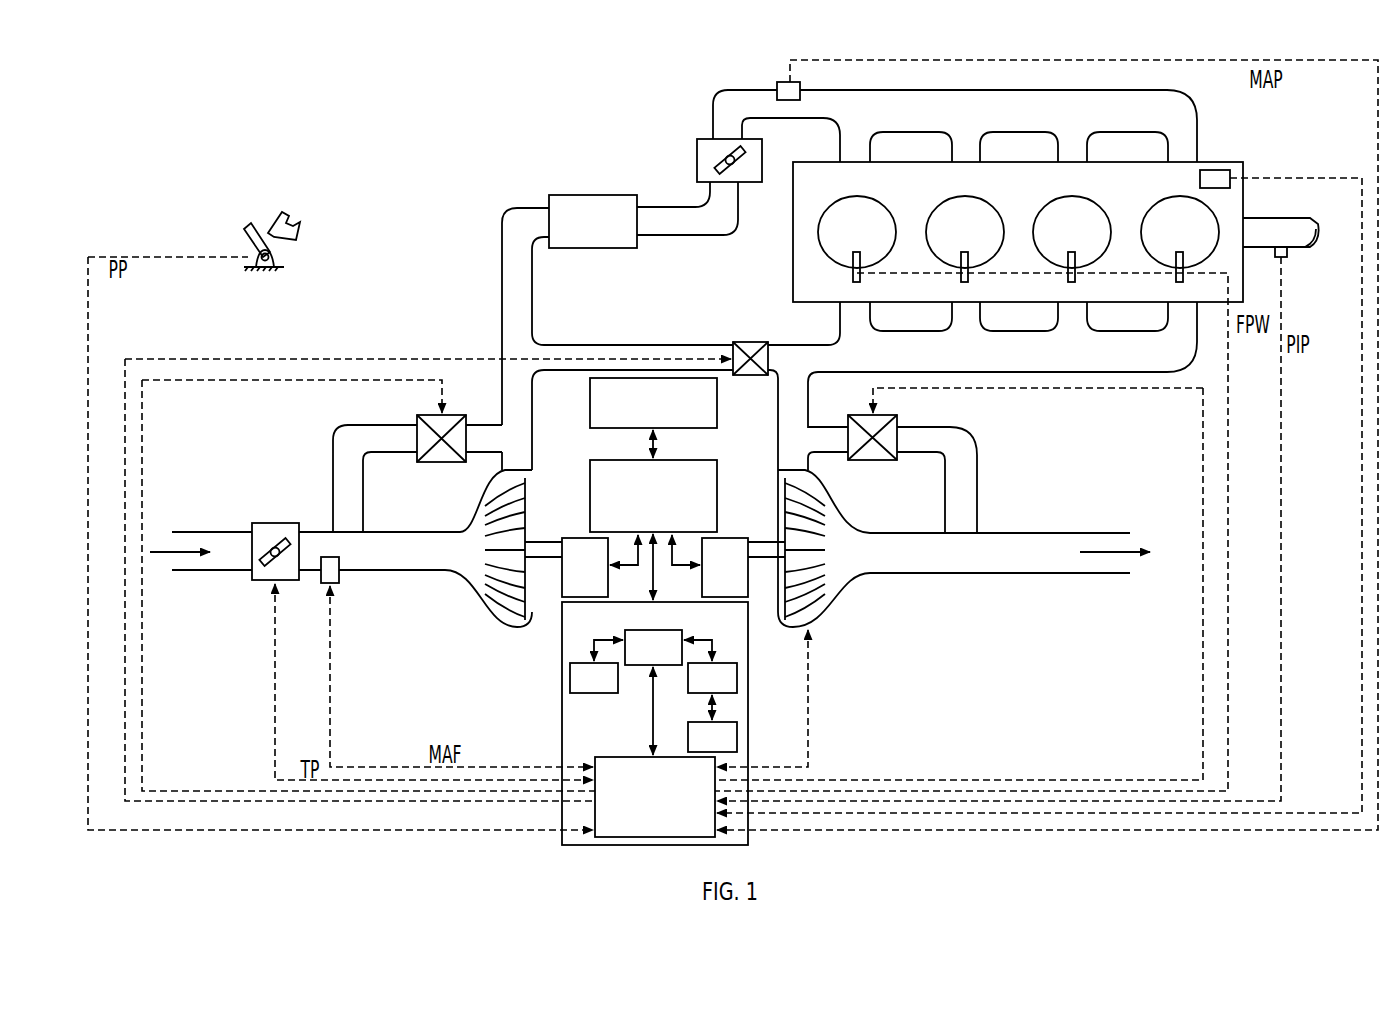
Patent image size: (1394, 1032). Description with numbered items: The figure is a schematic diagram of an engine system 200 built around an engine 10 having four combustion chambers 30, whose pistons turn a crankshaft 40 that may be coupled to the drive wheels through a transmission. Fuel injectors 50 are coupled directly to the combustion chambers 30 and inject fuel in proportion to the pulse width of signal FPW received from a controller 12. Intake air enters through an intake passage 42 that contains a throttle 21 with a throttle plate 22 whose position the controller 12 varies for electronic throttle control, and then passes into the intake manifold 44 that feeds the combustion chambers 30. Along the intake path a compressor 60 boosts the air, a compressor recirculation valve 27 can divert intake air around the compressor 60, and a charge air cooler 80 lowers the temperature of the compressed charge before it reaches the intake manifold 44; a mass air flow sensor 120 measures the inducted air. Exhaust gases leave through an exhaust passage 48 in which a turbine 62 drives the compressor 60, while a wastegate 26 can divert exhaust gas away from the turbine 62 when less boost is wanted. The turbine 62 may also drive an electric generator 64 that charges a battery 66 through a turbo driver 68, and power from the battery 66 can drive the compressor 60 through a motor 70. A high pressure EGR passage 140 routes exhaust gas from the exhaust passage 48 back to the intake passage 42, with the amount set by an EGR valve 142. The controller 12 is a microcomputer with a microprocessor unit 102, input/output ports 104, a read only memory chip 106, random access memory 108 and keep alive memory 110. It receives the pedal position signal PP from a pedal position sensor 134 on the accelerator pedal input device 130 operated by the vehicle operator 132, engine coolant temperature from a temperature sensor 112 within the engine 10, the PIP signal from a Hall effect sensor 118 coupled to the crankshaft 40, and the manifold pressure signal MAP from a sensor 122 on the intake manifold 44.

The engine 10 is at (1108, 190).
The controller 12 is at (654, 723).
The throttle 21 is at (266, 523).
The throttle plate 22 is at (286, 530).
The wastegate 26 is at (897, 430).
The compressor recirculation valve 27 is at (417, 432).
The combustion chamber 30 is at (847, 244).
The crankshaft 40 is at (1288, 218).
The intake passage 42 is at (218, 560).
The intake manifold 44 is at (870, 124).
The exhaust passage 48 is at (845, 362).
The fuel injector 50 is at (853, 283).
The compressor 60 is at (500, 603).
The turbine 62 is at (820, 505).
The electric generator 64 is at (715, 579).
The battery 66 is at (717, 415).
The turbo driver 68 is at (702, 460).
The motor 70 is at (575, 579).
The charge air cooler 80 is at (577, 195).
The microprocessor unit 102 is at (625, 636).
The input/output ports 104 is at (636, 757).
The read only memory chip 106 is at (570, 678).
The random access memory 108 is at (737, 678).
The keep alive memory 110 is at (737, 738).
The temperature sensor 112 is at (1215, 170).
The Hall effect sensor 118 is at (1283, 258).
The mass air flow sensor 120 is at (340, 585).
The manifold pressure sensor 122 is at (777, 88).
The input device 130 is at (247, 237).
The vehicle operator 132 is at (292, 224).
The pedal position sensor 134 is at (278, 262).
The EGR passage 140 is at (630, 345).
The EGR valve 142 is at (762, 342).
The engine system 200 is at (374, 162).